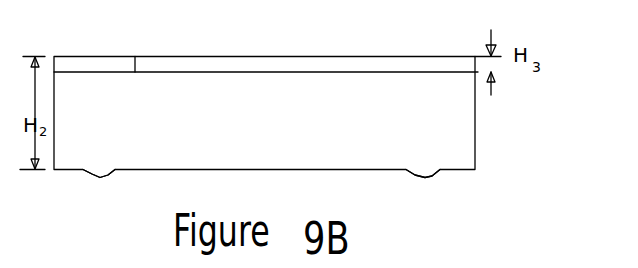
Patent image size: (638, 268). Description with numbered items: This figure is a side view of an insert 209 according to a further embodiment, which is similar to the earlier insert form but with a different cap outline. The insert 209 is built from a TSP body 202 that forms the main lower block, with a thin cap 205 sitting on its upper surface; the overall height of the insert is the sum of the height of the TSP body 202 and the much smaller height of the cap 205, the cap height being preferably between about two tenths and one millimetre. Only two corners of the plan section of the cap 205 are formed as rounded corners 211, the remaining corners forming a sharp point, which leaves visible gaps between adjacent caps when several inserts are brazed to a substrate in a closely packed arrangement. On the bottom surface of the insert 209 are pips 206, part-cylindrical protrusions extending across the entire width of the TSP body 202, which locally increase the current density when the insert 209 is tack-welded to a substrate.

The TSP body 202 is at (458, 125).
The cap 205 is at (347, 60).
The pip 206 is at (100, 178).
The insert 209 is at (148, 38).
The rounded corner 211 is at (65, 60).